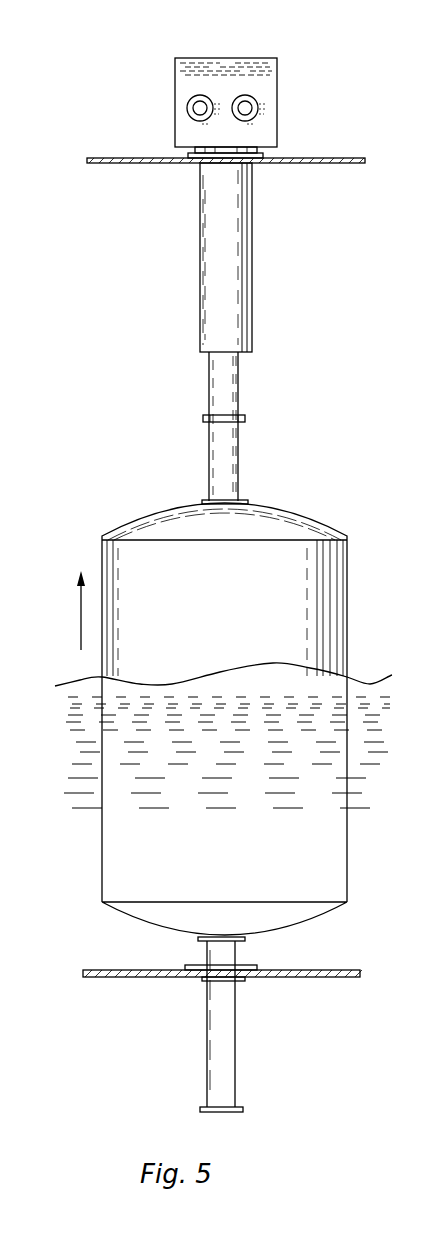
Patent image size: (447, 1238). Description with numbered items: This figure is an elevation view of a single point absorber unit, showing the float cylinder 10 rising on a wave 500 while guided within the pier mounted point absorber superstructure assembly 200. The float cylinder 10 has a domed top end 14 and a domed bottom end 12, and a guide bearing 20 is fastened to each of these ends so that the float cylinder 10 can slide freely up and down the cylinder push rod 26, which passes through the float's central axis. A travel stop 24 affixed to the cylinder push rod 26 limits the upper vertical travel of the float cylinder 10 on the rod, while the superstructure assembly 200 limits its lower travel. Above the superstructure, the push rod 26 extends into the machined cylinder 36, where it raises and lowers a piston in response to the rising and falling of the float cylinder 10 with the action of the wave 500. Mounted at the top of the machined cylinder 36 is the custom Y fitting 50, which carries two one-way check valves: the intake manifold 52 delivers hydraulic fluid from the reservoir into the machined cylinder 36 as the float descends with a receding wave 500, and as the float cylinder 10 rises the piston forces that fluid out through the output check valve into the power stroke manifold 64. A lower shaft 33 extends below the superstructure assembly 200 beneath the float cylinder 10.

The float cylinder 10 is at (193, 712).
The bottom end 12 is at (140, 917).
The top end 14 is at (268, 515).
The guide bearing 20 is at (202, 503).
The travel stop 24 is at (247, 419).
The cylinder push rod 26 is at (218, 447).
The lower shaft 33 is at (237, 975).
The machined cylinder 36 is at (212, 225).
The custom Y fitting 50 is at (210, 70).
The intake manifold 52 is at (198, 107).
The power stroke manifold 64 is at (248, 107).
The pier mounted point absorber superstructure assembly 200 is at (118, 163).
The wave 500 is at (66, 682).